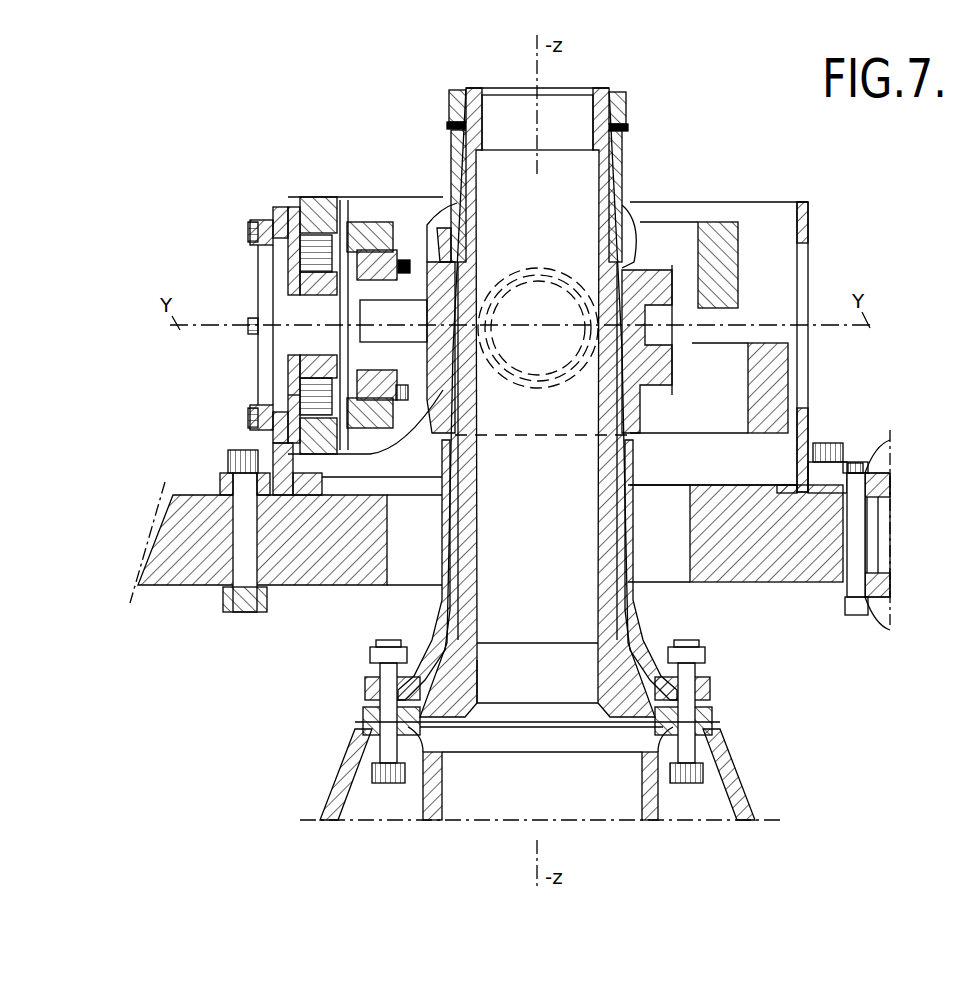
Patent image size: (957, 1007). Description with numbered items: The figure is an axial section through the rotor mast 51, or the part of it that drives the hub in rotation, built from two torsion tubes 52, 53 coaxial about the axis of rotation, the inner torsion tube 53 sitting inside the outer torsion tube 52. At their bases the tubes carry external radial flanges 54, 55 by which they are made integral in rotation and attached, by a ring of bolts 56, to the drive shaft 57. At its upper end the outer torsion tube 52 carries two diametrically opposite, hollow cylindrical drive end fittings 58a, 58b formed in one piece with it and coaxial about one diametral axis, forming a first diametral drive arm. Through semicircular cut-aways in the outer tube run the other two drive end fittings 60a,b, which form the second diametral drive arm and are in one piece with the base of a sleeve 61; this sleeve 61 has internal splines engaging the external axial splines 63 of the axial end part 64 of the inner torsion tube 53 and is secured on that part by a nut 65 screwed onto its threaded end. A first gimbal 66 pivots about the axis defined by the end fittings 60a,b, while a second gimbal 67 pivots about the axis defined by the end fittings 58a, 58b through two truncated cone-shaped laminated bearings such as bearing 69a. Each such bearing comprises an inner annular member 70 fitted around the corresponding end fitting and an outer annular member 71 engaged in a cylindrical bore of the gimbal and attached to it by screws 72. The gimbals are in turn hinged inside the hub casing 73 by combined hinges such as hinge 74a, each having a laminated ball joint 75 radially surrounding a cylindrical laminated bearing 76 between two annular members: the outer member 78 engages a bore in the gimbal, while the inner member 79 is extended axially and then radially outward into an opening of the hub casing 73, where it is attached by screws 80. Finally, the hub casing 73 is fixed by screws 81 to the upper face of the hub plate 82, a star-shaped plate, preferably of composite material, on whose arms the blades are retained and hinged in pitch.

The rotor mast 51 is at (478, 660).
The outer torsion tube 52 is at (443, 592).
The inner torsion tube 53 is at (476, 522).
The external radial flange 54 is at (372, 682).
The external radial flange 55 is at (373, 710).
The bolts 56 is at (692, 692).
The drive shaft 57 is at (431, 790).
The drive end fitting 58a is at (433, 268).
The drive end fitting 58b is at (666, 282).
The drive end fittings 60a,b is at (543, 277).
The sleeve 61 is at (628, 245).
The external axial splines 63 is at (622, 175).
The axial end part 64 is at (622, 150).
The nut 65 is at (447, 100).
The first gimbal 66 is at (770, 392).
The second gimbal 67 is at (380, 233).
The truncated cone-shaped laminated bearing 69a is at (404, 404).
The inner annular member 70 is at (379, 358).
The outer annular member 71 is at (357, 392).
The screws 72 is at (407, 258).
The hub casing 73 is at (810, 215).
The combined hinge 74a is at (287, 404).
The laminated ball joint 75 is at (300, 243).
The cylindrical laminated bearing 76 is at (315, 262).
The annular member 78 is at (322, 423).
The annular member 79 is at (287, 383).
The screws 80 is at (252, 424).
The screws 81 is at (247, 565).
The hub plate 82 is at (775, 562).